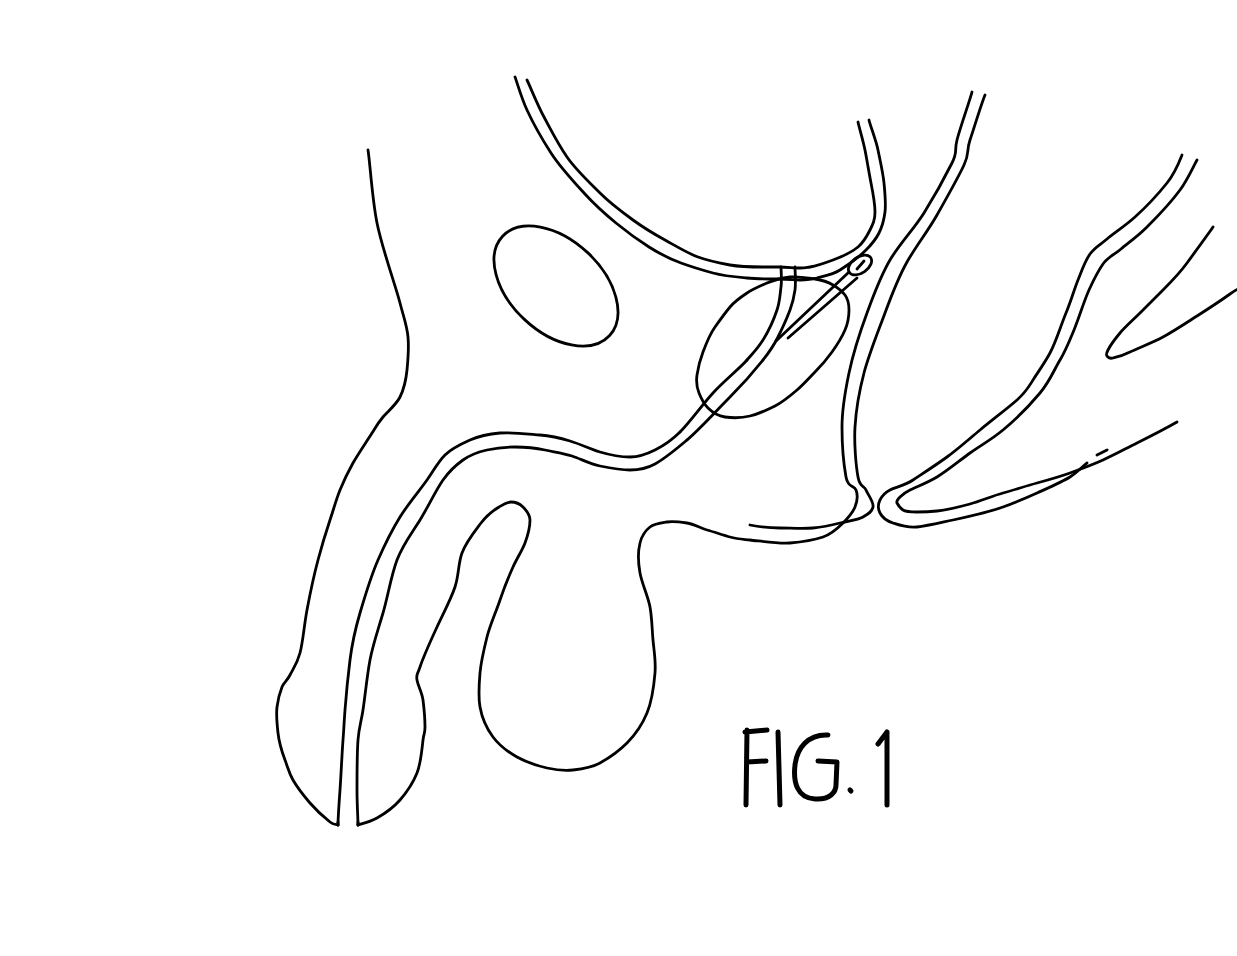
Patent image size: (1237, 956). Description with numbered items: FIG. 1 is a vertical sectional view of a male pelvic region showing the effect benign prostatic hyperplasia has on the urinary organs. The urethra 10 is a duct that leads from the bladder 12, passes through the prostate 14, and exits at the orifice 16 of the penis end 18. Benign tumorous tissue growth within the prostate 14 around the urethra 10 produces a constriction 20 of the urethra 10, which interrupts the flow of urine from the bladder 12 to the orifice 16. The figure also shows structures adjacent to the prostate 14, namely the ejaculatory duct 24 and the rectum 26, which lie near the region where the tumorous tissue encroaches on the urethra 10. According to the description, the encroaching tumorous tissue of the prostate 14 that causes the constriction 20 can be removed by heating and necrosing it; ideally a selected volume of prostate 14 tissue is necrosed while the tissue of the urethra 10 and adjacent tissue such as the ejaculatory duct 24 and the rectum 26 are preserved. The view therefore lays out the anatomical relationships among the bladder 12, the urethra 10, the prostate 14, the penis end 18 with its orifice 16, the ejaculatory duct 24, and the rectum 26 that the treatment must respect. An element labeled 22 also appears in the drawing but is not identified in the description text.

The urethra 10 is at (442, 457).
The bladder 12 is at (607, 163).
The prostate 14 is at (780, 365).
The orifice 16 is at (347, 828).
The penis end 18 is at (283, 762).
The constriction 20 is at (760, 332).
The catheter 22 is at (787, 264).
The ejaculatory duct 24 is at (797, 313).
The rectum 26 is at (907, 422).